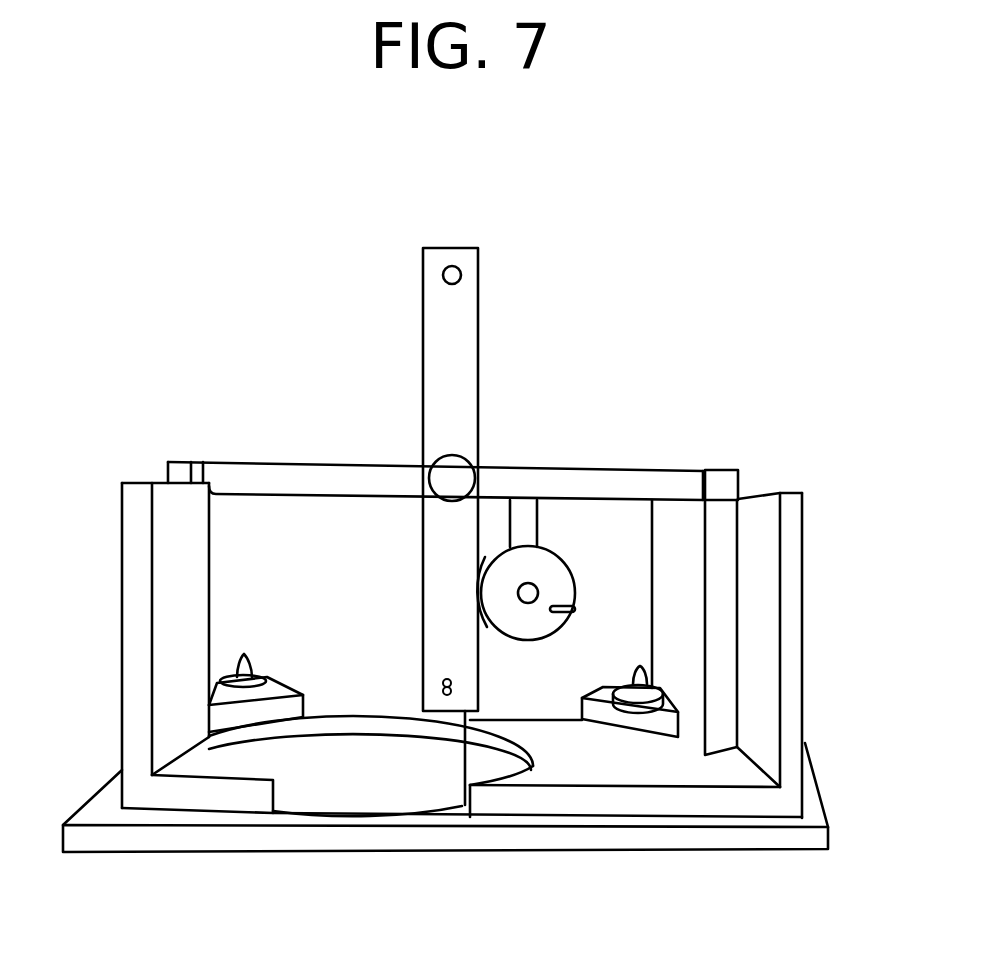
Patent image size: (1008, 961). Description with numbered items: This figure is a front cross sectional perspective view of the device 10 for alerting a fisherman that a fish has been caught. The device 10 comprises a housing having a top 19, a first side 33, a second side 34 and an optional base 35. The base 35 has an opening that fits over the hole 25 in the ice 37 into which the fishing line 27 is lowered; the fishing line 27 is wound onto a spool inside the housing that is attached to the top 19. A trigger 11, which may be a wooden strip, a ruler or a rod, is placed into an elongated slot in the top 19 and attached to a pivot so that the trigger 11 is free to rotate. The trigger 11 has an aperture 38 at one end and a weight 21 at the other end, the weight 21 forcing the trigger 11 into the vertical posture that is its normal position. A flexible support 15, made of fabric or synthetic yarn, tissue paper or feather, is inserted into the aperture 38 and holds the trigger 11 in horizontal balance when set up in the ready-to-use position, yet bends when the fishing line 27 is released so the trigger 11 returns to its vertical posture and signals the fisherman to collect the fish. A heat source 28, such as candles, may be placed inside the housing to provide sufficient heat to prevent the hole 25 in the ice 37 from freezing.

The device 10 is at (172, 305).
The trigger 11 is at (452, 330).
The flexible support 15 is at (457, 472).
The top 19 is at (355, 465).
The weight 21 is at (445, 681).
The hole 25 is at (373, 786).
The fishing line 27 is at (462, 802).
The heat source 28 is at (246, 653).
The first side 33 is at (132, 640).
The second side 34 is at (788, 634).
The base 35 is at (660, 766).
The ice 37 is at (566, 836).
The aperture 38 is at (462, 270).